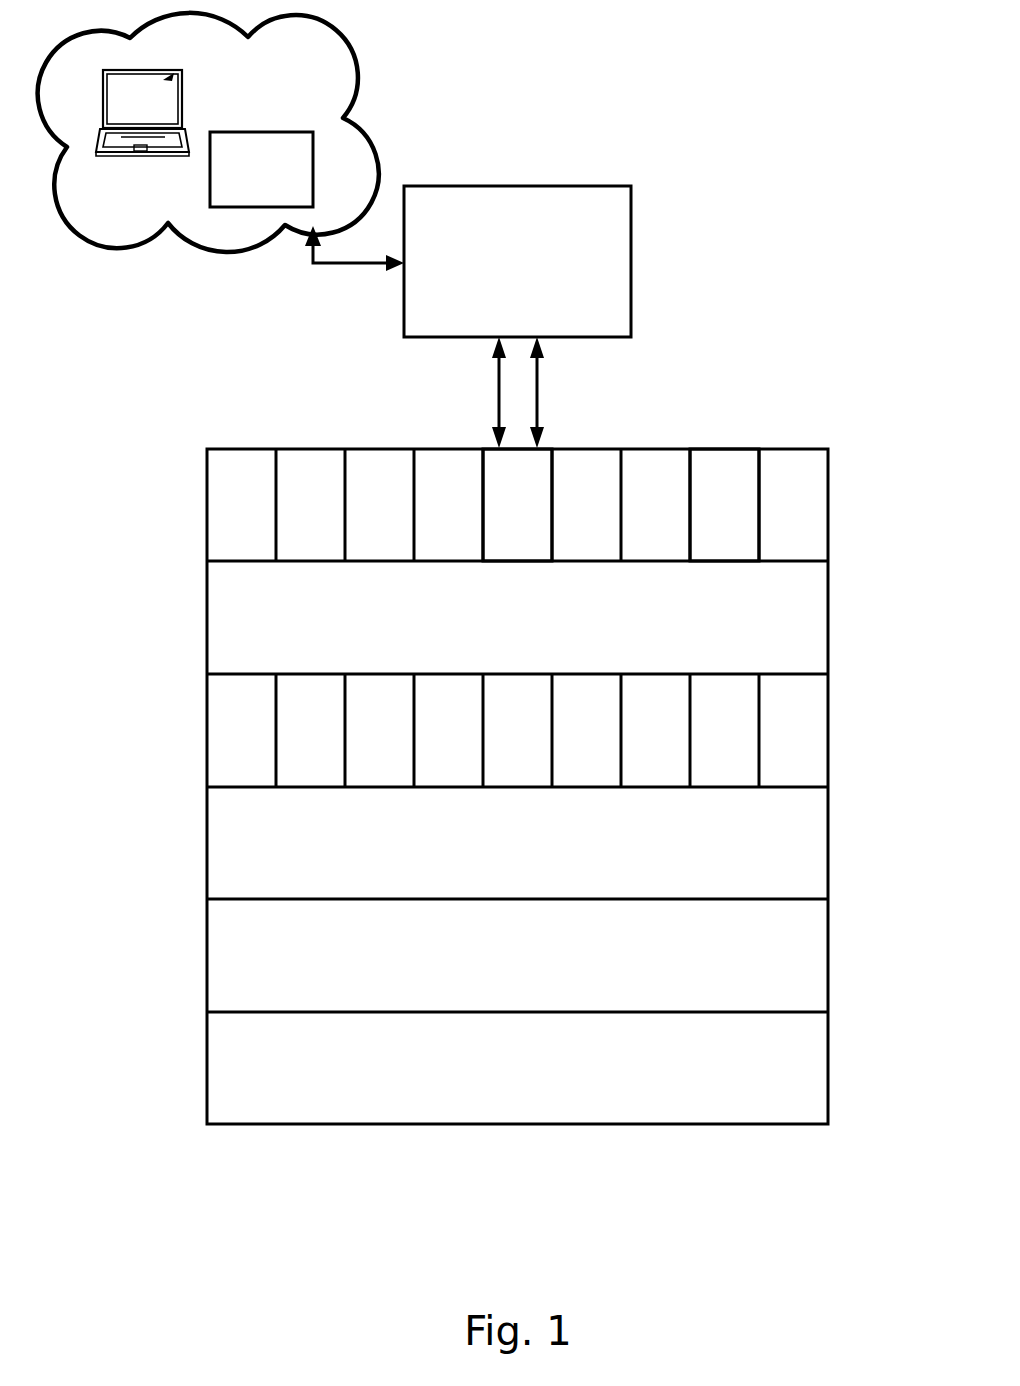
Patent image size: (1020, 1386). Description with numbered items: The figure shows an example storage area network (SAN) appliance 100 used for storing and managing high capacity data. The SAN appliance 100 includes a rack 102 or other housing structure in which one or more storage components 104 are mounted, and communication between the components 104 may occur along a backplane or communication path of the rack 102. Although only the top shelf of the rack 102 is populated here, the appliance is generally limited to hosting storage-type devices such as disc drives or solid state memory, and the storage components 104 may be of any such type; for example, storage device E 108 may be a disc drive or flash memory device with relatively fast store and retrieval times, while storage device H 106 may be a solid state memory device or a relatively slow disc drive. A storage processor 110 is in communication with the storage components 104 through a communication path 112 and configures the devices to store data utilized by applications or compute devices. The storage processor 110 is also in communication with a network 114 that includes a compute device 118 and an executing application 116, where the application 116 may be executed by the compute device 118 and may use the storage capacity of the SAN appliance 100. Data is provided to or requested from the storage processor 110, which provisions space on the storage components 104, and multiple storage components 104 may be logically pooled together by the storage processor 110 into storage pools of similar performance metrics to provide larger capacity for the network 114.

The storage area network (SAN) appliance 100 is at (106, 695).
The rack 102 is at (830, 640).
The storage components 104 is at (457, 462).
The storage device H 106 is at (724, 460).
The storage device E 108 is at (546, 460).
The storage processor 110 is at (621, 330).
The communication path 112 is at (497, 397).
The network 114 is at (303, 66).
The application 116 is at (307, 198).
The compute device 118 is at (182, 128).